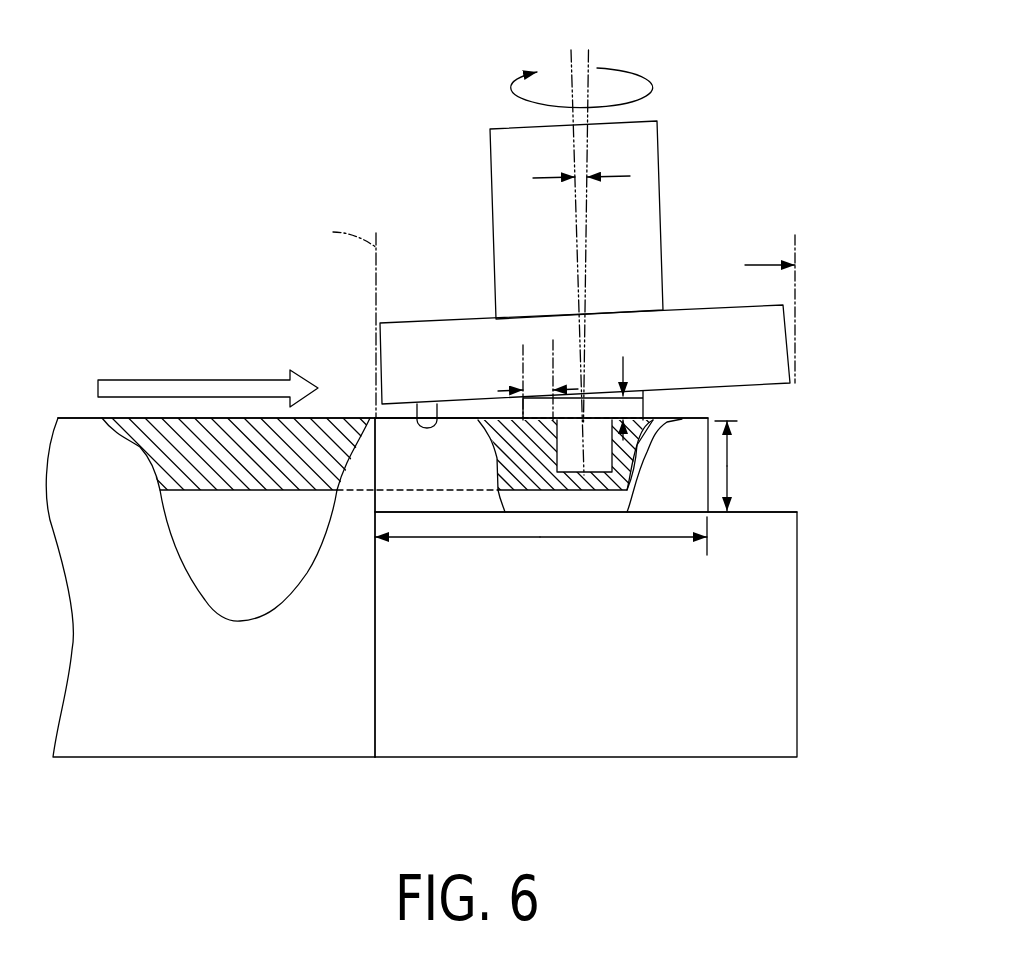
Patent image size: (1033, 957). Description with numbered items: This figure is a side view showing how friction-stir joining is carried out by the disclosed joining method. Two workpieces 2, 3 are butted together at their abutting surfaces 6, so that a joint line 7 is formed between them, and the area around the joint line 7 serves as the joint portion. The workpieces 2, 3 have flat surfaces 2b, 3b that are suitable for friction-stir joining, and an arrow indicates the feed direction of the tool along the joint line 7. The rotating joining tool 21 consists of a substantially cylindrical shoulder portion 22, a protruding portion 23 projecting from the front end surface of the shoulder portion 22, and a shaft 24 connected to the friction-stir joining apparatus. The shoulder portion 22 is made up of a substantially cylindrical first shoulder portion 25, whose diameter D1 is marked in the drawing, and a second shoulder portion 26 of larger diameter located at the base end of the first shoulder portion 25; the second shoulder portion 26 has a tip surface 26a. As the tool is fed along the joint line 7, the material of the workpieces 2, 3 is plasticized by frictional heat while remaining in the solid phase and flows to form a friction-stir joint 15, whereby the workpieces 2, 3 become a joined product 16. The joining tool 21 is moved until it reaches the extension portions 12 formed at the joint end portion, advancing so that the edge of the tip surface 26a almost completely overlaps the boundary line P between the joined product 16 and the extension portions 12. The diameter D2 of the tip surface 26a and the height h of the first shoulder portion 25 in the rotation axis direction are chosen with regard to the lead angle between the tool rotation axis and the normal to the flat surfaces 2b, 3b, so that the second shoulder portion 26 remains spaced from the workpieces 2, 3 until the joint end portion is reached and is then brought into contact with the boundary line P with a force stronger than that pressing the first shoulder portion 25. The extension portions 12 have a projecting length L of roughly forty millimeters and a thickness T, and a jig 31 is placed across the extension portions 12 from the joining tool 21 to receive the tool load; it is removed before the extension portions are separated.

The workpiece 2 is at (375, 638).
The workpiece 3 is at (376, 640).
The flat surface 2b is at (173, 418).
The flat surface 3b is at (173, 418).
The abutting surface 6 is at (213, 560).
The joint line 7 is at (337, 418).
The extension portion 12 is at (647, 513).
The friction-stir joint 15 is at (190, 492).
The joined product 16 is at (376, 695).
The joining tool 21 is at (692, 142).
The shoulder portion 22 is at (647, 353).
The protruding portion 23 is at (630, 445).
The shaft 24 is at (664, 230).
The first shoulder portion 25 is at (647, 405).
The second shoulder portion 26 is at (619, 331).
The tip surface 26a is at (435, 403).
The jig 31 is at (675, 758).
The boundary line P is at (348, 316).
The pin diameter D1 is at (540, 387).
The diameter of the tip surface D2 is at (758, 265).
The height of the first shoulder portion h is at (633, 397).
The workpiece thickness T is at (730, 453).
The projecting length L is at (462, 540).